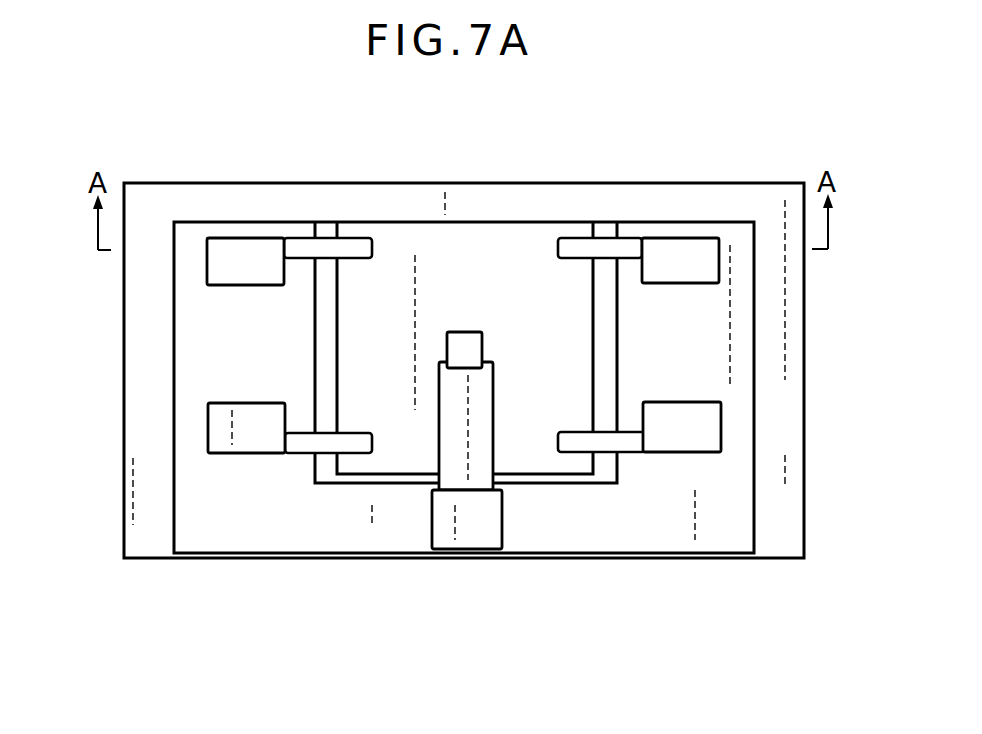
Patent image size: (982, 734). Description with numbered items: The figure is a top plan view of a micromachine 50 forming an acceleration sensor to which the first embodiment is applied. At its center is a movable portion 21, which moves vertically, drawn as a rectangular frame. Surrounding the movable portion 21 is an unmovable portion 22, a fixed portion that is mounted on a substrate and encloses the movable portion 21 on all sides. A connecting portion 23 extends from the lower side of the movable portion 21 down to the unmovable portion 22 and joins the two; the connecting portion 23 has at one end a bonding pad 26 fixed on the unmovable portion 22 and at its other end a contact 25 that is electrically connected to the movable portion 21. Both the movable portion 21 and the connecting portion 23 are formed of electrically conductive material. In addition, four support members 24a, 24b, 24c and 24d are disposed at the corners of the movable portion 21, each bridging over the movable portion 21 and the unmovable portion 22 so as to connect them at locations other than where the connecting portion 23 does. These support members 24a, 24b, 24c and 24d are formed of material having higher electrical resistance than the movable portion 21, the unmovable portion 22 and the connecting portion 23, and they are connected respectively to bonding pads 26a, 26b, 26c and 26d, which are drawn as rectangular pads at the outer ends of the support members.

The micromachine 50 is at (93, 323).
The unmovable portion 22 is at (187, 355).
The movable portion 21 is at (540, 462).
The connecting portion 23 is at (485, 412).
The contact 25 is at (477, 348).
The bonding pad 26 is at (473, 538).
The bonding pad 26a is at (695, 248).
The bonding pad 26b is at (710, 428).
The bonding pad 26c is at (245, 248).
The bonding pad 26d is at (217, 428).
The support member 24a is at (577, 248).
The support member 24b is at (609, 447).
The support member 24c is at (362, 243).
The support member 24d is at (355, 440).